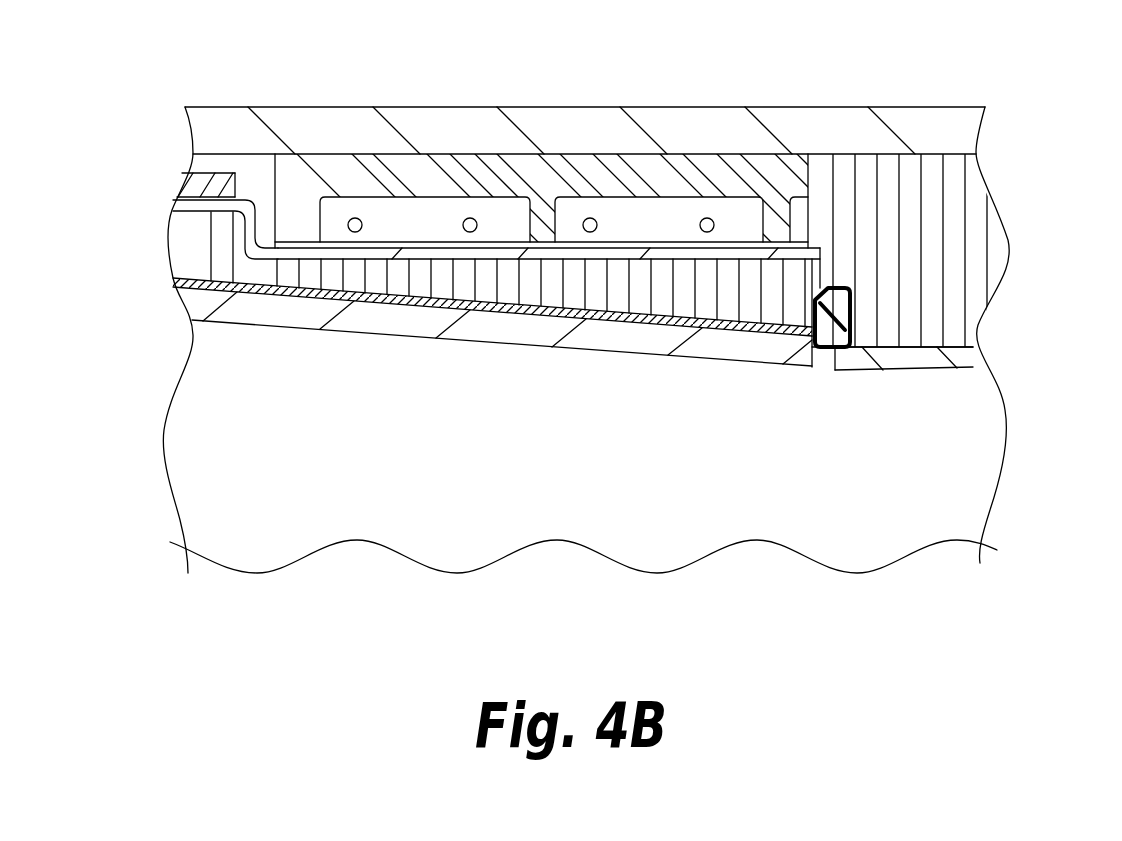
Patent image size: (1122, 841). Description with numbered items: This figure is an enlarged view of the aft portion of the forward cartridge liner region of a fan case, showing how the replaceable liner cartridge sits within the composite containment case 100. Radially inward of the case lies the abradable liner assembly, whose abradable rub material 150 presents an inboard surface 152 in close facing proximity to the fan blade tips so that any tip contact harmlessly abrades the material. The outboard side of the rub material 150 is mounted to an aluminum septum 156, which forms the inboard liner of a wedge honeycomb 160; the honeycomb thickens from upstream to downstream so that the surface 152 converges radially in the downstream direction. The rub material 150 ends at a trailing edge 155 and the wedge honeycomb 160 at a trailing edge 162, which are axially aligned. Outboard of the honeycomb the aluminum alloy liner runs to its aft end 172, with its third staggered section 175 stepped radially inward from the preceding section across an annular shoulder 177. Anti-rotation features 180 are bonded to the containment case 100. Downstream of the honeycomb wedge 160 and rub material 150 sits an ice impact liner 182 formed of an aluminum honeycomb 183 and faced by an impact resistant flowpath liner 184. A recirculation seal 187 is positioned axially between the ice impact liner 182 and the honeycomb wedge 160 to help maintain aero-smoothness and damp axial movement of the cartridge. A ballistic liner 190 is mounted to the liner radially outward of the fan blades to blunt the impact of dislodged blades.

The containment case 100 is at (477, 112).
The abradable rub material 150 is at (295, 315).
The inboard surface 152 is at (223, 322).
The trailing edge 155 is at (818, 352).
The aluminum septum 156 is at (632, 318).
The wedge honeycomb 160 is at (563, 290).
The trailing edge 162 is at (822, 270).
The aft end 172 is at (822, 253).
The third staggered section 175 is at (270, 247).
The annular shoulder 177 is at (257, 237).
The anti-rotation features 180 is at (557, 222).
The ice impact liner 182 is at (975, 290).
The aluminum honeycomb 183 is at (973, 183).
The impact resistant flowpath liner 184 is at (915, 358).
The recirculation seal 187 is at (828, 348).
The ballistic liner 190 is at (203, 172).